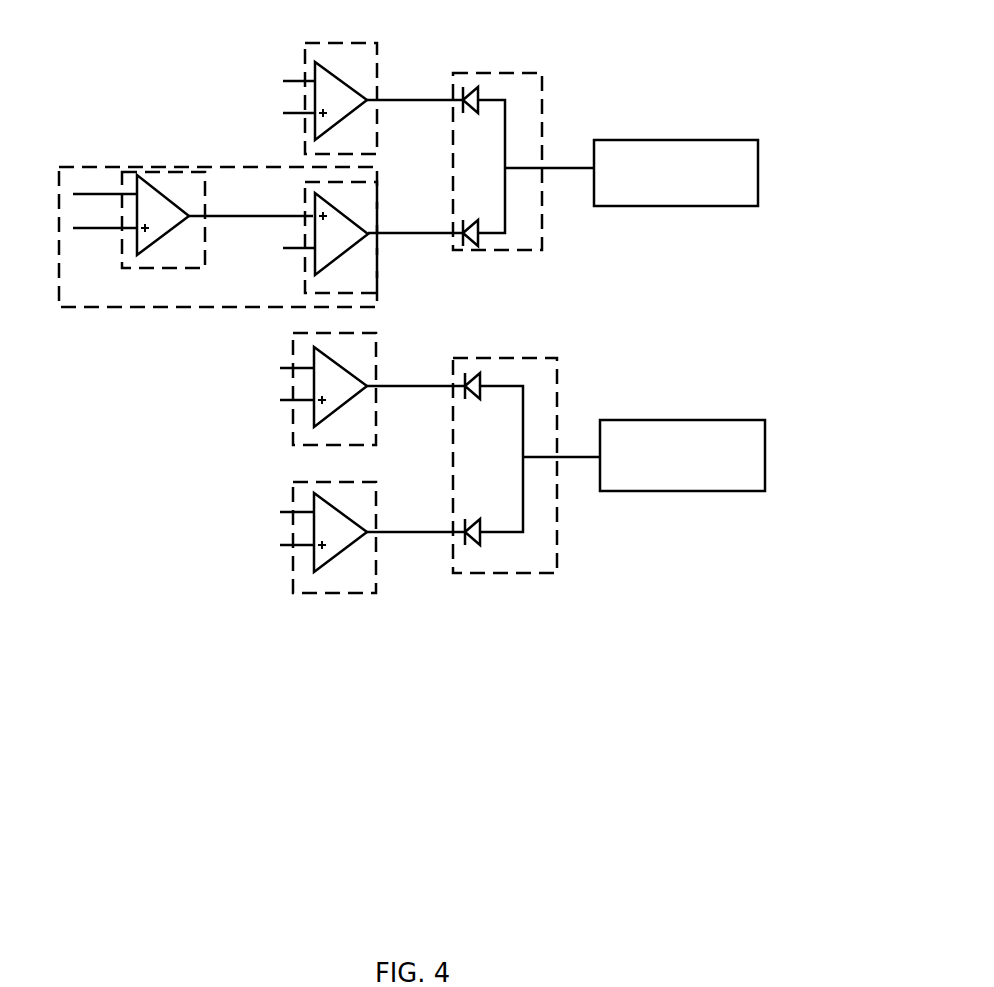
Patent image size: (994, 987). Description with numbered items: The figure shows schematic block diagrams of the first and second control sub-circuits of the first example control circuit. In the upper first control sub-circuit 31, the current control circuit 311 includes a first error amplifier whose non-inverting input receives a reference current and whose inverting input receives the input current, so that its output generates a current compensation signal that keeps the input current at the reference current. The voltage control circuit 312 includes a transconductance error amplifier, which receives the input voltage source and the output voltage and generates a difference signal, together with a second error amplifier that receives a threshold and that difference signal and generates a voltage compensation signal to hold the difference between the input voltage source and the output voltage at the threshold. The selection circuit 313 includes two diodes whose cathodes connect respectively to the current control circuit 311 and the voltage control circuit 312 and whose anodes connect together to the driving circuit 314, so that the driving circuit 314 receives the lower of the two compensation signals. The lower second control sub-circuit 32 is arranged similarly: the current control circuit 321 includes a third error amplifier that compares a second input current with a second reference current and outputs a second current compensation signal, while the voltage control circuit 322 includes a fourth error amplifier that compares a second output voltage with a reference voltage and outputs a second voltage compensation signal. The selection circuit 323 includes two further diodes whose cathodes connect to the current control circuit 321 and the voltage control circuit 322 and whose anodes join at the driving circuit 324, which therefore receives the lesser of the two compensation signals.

The first control sub-circuit 31 is at (717, 60).
The current control circuit 311 is at (352, 44).
The voltage control circuit 312 is at (133, 168).
The selection circuit 313 is at (515, 73).
The driving circuit 314 is at (617, 141).
The second control sub-circuit 32 is at (723, 362).
The current control circuit 321 is at (377, 346).
The voltage control circuit 322 is at (377, 487).
The selection circuit 323 is at (513, 358).
The driving circuit 324 is at (617, 420).